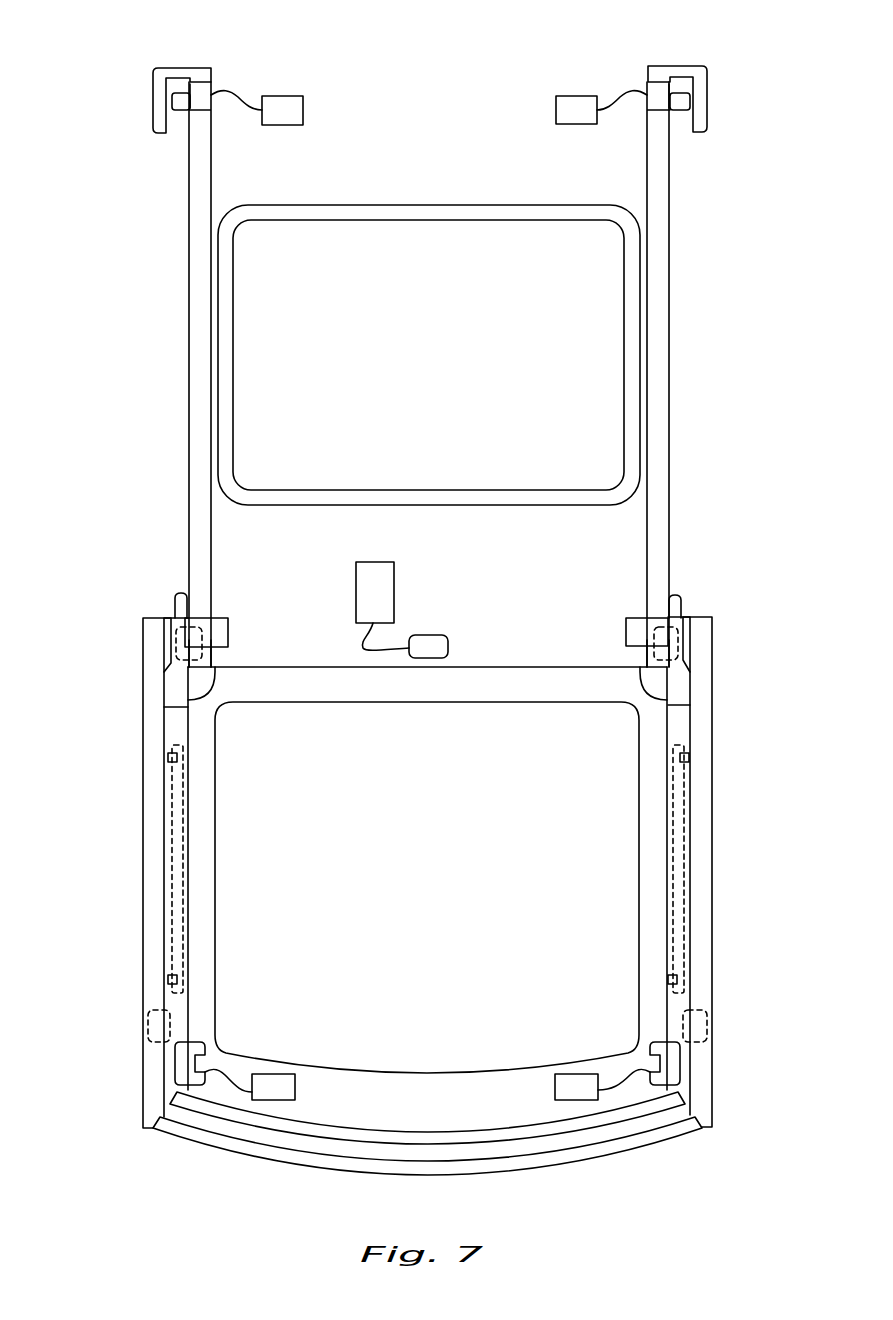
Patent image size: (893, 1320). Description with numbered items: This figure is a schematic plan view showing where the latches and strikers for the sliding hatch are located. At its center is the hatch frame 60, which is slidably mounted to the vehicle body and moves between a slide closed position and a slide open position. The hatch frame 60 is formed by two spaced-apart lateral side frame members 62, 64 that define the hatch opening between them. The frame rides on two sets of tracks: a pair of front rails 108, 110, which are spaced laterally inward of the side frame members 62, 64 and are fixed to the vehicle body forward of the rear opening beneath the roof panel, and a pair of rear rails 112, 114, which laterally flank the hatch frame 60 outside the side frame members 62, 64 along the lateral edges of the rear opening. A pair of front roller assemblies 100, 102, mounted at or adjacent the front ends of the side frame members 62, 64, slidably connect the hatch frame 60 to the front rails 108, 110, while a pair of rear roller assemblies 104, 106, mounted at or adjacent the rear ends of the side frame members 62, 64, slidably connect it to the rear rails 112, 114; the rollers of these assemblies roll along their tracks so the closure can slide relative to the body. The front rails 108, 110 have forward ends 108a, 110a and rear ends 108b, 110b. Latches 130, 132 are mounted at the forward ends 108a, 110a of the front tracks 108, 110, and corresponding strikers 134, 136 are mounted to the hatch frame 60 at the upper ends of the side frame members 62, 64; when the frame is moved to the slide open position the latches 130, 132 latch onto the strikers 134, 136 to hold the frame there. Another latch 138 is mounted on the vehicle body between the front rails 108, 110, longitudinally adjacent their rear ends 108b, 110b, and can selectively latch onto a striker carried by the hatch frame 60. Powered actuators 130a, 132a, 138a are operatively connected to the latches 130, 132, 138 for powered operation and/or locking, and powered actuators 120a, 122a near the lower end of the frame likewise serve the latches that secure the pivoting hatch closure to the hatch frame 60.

The hatch frame 60 is at (205, 831).
The lateral side frame member 62 is at (180, 723).
The lateral side frame member 64 is at (678, 728).
The front roller assembly 100 is at (203, 635).
The front roller assembly 102 is at (653, 633).
The rear roller assembly 104 is at (152, 1025).
The rear roller assembly 106 is at (715, 1030).
The front rail 108 is at (185, 293).
The front end of front rail 108a is at (200, 122).
The rear end of front rail 108b is at (217, 658).
The front rail 110 is at (670, 291).
The front end of front rail 110a is at (660, 120).
The rear end of front rail 110b is at (640, 658).
The rear rail 112 is at (150, 937).
The rear rail 114 is at (703, 917).
The powered actuator 120a is at (273, 1085).
The powered actuator 122a is at (580, 1085).
The latch 130 is at (175, 72).
The powered actuator 130a is at (282, 102).
The latch 132 is at (668, 70).
The powered actuator 132a is at (572, 102).
The striker 134 is at (178, 602).
The striker 136 is at (678, 602).
The latch 138 is at (427, 642).
The powered actuator 138a is at (385, 583).